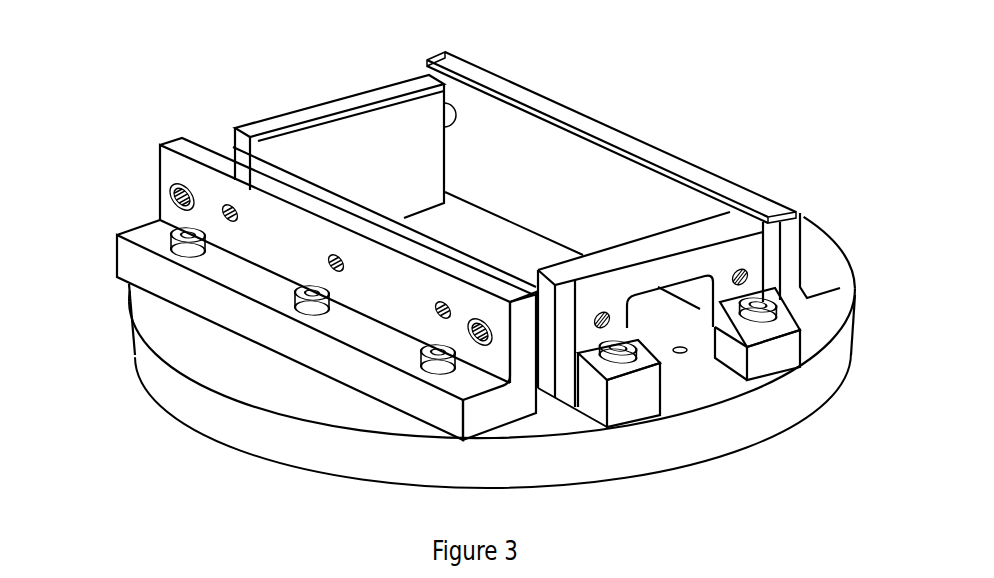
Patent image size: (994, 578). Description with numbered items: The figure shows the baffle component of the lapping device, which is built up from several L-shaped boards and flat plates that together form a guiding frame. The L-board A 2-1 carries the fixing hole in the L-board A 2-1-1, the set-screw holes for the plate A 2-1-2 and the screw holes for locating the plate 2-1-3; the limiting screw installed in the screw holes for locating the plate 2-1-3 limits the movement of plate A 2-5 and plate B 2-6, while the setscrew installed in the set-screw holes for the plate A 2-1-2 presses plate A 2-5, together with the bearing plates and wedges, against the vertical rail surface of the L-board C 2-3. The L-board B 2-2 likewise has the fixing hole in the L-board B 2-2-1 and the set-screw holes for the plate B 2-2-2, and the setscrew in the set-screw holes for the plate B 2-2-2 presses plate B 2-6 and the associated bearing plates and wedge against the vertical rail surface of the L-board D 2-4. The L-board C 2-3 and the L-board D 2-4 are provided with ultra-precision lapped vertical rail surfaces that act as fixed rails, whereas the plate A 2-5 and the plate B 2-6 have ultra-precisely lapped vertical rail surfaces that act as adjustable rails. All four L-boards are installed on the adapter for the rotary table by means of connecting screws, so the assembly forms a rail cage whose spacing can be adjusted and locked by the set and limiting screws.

The L-board A 2-1 is at (357, 360).
The fixing hole in the L-board A 2-1-1 is at (192, 262).
The set-screw holes for the plate A 2-1-2 is at (222, 209).
The screw holes for locating the plate 2-1-3 is at (188, 185).
The L-board B 2-2 is at (583, 370).
The fixing hole in the L-board B 2-2-1 is at (649, 397).
The set-screw holes for the plate B 2-2-2 is at (780, 325).
The L-board C 2-3 is at (625, 143).
The L-board D 2-4 is at (345, 103).
The plate A 2-5 is at (455, 248).
The plate B 2-6 is at (657, 235).